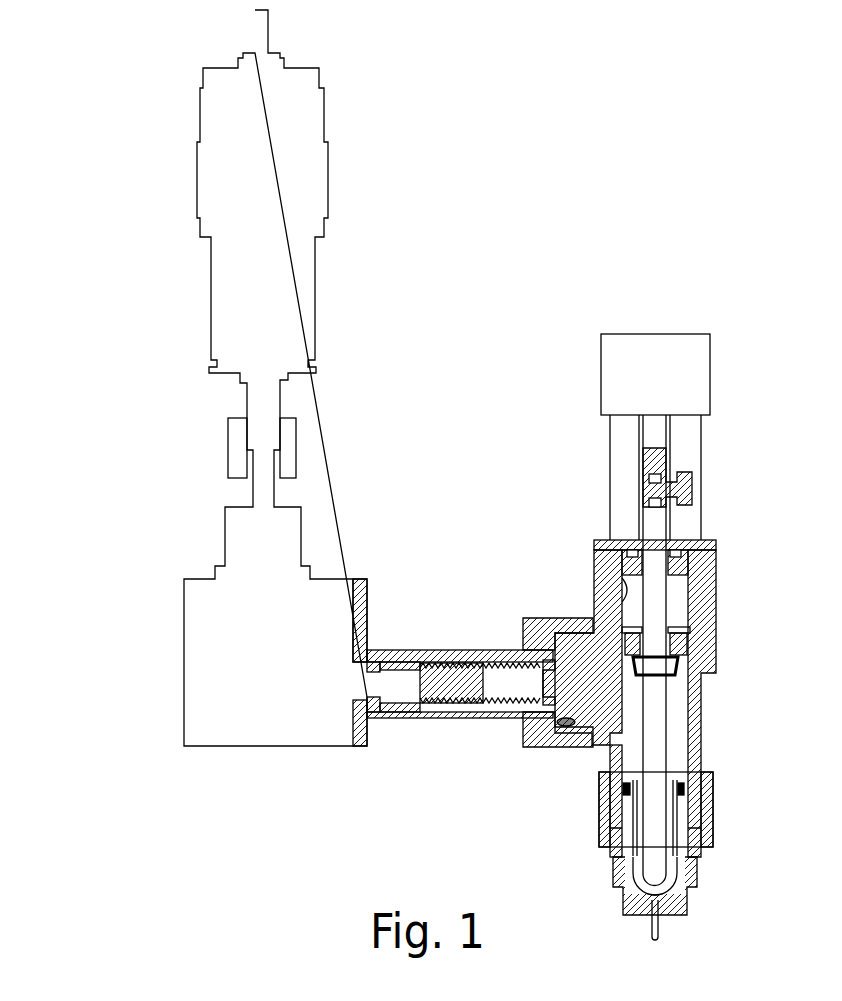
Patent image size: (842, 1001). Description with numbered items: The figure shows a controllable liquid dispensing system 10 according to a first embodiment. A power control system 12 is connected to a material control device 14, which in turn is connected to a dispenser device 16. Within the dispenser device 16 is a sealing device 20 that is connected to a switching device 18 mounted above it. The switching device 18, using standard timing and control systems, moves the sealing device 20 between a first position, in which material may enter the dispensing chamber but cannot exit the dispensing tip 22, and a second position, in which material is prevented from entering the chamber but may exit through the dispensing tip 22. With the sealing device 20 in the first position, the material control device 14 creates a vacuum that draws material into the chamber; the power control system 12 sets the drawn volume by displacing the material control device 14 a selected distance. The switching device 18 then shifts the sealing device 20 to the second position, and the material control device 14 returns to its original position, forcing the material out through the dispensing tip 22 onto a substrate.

The controllable liquid dispensing system 10 is at (652, 255).
The power control system 12 is at (163, 712).
The material control device 14 is at (438, 730).
The dispenser device 16 is at (740, 600).
The switching device 18 is at (730, 375).
The sealing device 20 is at (672, 732).
The dispensing tip 22 is at (667, 942).